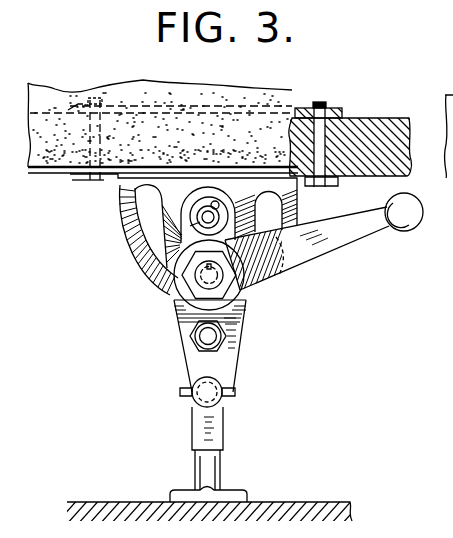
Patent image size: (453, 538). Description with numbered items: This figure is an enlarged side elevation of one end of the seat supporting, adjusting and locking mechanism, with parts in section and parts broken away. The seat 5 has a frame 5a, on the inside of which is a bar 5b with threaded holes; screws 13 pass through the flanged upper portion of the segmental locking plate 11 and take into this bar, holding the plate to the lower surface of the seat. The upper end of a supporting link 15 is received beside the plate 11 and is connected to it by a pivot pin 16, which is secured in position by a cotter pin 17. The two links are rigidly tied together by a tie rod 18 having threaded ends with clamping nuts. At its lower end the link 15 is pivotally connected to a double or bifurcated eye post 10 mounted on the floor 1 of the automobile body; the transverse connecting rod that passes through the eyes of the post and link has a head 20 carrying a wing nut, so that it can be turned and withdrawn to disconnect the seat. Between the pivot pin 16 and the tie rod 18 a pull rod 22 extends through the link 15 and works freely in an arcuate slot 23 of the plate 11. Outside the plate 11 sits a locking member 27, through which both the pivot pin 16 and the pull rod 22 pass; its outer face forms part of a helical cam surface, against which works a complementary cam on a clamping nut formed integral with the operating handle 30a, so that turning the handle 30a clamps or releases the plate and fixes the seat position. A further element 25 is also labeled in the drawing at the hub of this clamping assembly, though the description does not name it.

The floor 1 is at (300, 508).
The seat 5 is at (160, 92).
The frame of the seat 5a is at (384, 130).
The bar 5b is at (336, 108).
The double eye post 10 is at (213, 468).
The segmental locking plate 11 is at (128, 212).
The screws 13 is at (333, 187).
The supporting link 15 is at (233, 322).
The pivot pin 16 is at (208, 212).
The cotter pin 17 is at (222, 207).
The tie rod 18 is at (200, 340).
The head 20 is at (196, 402).
The pull rod 22 is at (208, 281).
The arcuate slot 23 is at (157, 238).
The hub 25 is at (175, 294).
The locking member 27 is at (180, 277).
The operating handle 30a is at (332, 246).